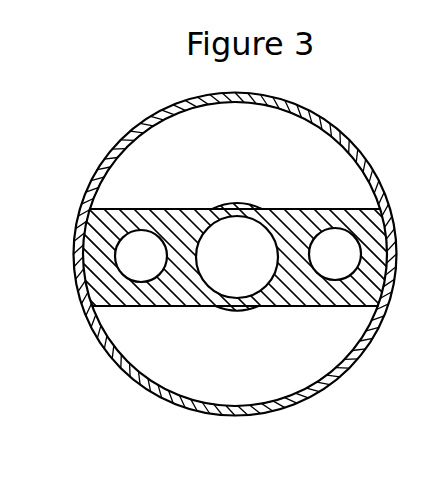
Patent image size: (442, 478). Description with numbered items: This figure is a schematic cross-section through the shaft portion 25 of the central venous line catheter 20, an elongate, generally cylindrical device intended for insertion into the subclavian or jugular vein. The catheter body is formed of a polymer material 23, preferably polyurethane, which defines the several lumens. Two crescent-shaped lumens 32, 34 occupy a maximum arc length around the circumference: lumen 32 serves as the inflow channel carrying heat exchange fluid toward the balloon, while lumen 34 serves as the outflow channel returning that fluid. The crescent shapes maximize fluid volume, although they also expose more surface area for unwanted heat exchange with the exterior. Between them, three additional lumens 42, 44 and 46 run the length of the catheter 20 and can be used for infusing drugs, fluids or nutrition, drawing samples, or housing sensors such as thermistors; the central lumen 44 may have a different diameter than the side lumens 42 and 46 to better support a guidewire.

The central venous line catheter 20 is at (169, 101).
The shaft portion 25 is at (135, 125).
The lumen 32 is at (335, 162).
The lumen 34 is at (217, 392).
The polymer material 23 is at (92, 278).
The side lumen 42 is at (125, 252).
The central lumen 44 is at (248, 230).
The side lumen 46 is at (336, 240).